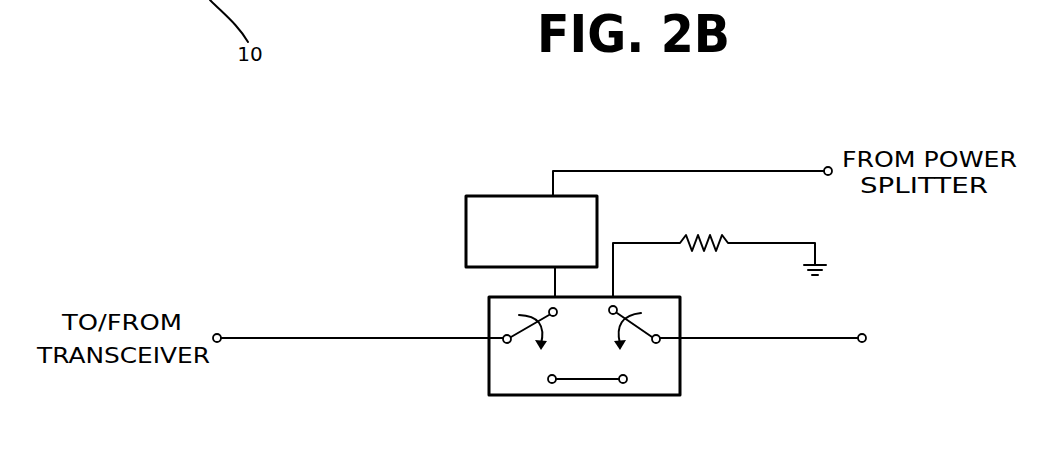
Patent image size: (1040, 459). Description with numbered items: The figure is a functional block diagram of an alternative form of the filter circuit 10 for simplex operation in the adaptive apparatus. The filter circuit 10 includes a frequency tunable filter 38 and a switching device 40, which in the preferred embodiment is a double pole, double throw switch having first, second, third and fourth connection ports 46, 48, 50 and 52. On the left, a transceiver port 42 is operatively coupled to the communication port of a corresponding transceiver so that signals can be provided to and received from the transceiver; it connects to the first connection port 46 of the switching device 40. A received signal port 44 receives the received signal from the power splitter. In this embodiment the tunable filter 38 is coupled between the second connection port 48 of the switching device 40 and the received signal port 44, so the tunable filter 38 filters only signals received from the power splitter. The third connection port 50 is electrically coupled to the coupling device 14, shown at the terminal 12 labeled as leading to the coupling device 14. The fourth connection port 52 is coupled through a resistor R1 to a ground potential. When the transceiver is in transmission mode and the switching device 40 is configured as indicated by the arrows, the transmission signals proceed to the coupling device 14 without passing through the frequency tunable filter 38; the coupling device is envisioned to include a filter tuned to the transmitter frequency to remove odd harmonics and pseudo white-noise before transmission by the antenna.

The filter circuit 10 is at (408, 184).
The terminal to coupling device 12 is at (862, 333).
The coupling device 14 is at (954, 339).
The frequency tunable filter 38 is at (500, 195).
The switching device 40 is at (627, 397).
The transceiver port 42 is at (221, 333).
The received signal port 44 is at (826, 168).
The first connection port 46 is at (503, 341).
The second connection port 48 is at (552, 296).
The third connection port 50 is at (681, 337).
The fourth connection port 52 is at (615, 296).
The resistor R1 is at (689, 242).